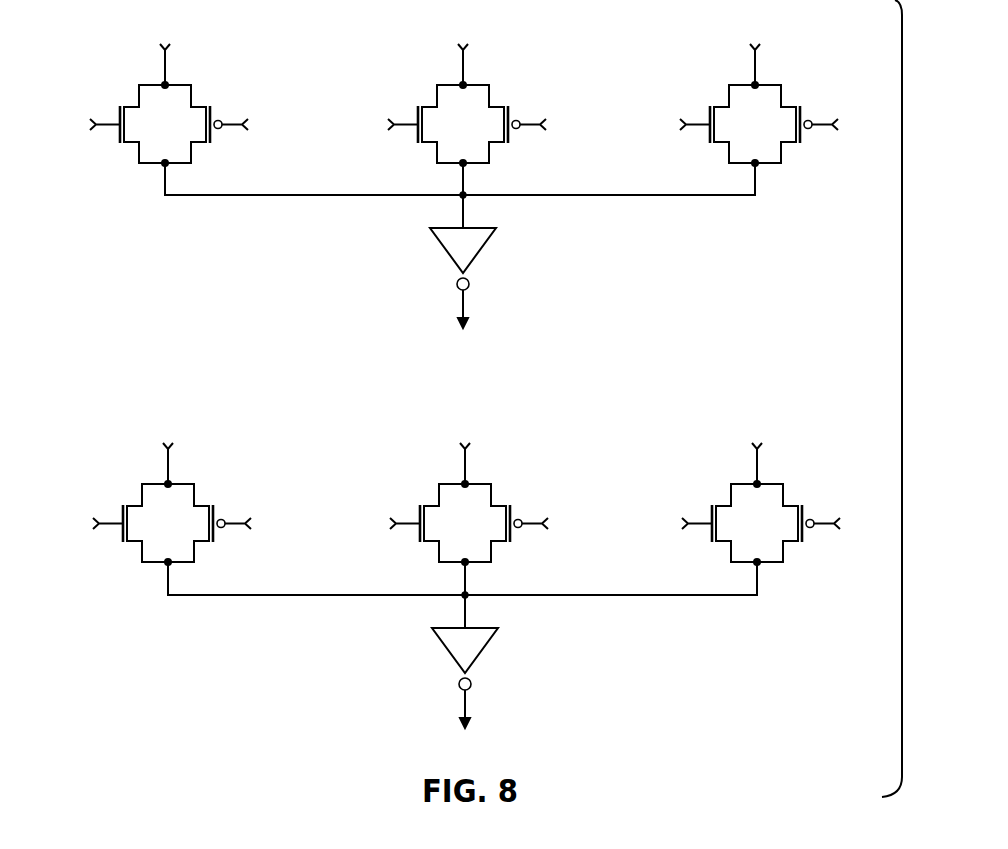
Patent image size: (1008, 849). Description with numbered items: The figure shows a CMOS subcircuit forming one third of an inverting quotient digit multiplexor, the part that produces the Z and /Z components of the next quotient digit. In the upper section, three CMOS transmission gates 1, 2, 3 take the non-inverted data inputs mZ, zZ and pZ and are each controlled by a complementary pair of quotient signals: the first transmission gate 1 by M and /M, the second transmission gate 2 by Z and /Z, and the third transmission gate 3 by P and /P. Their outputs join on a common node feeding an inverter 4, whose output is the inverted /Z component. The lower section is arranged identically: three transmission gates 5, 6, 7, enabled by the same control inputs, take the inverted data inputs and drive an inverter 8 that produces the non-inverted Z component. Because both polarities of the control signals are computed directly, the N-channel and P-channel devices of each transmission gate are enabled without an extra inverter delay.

The transmission gate (M, upper) 1 is at (270, 103).
The transmission gate (Z, upper) 2 is at (559, 103).
The transmission gate (P, upper) 3 is at (852, 103).
The inverter (upper) 4 is at (437, 318).
The transmission gate (M, lower) 5 is at (163, 405).
The transmission gate (Z, lower) 6 is at (470, 405).
The transmission gate (P, lower) 7 is at (759, 405).
The inverter (lower) 8 is at (462, 693).